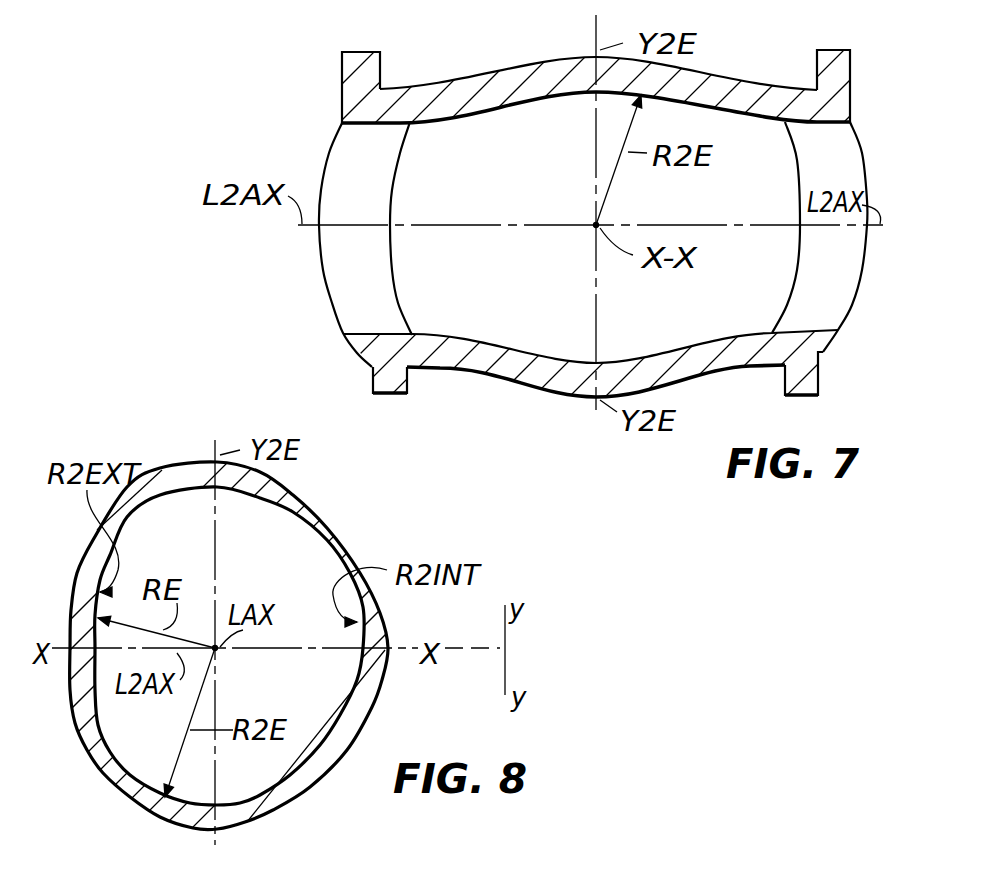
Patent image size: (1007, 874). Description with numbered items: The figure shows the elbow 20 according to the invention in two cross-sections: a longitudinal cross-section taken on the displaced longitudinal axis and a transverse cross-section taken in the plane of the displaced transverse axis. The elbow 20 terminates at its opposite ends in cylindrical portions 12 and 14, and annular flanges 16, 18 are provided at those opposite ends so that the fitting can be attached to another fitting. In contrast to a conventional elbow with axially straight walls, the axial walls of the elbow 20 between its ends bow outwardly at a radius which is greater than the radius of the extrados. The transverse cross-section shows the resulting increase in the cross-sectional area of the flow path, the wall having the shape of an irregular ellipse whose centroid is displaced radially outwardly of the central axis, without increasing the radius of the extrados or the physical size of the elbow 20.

In FIG. 7, the cylindrical portion 12 is at (847, 143).
In FIG. 7, the cylindrical portion 14 is at (334, 153).
In FIG. 7, the annular flange 16 is at (832, 53).
In FIG. 7, the annular flange 18 is at (363, 55).
In FIG. 7, the elbow 20 is at (492, 83).
In FIG. 8, the elbow 20 is at (310, 520).